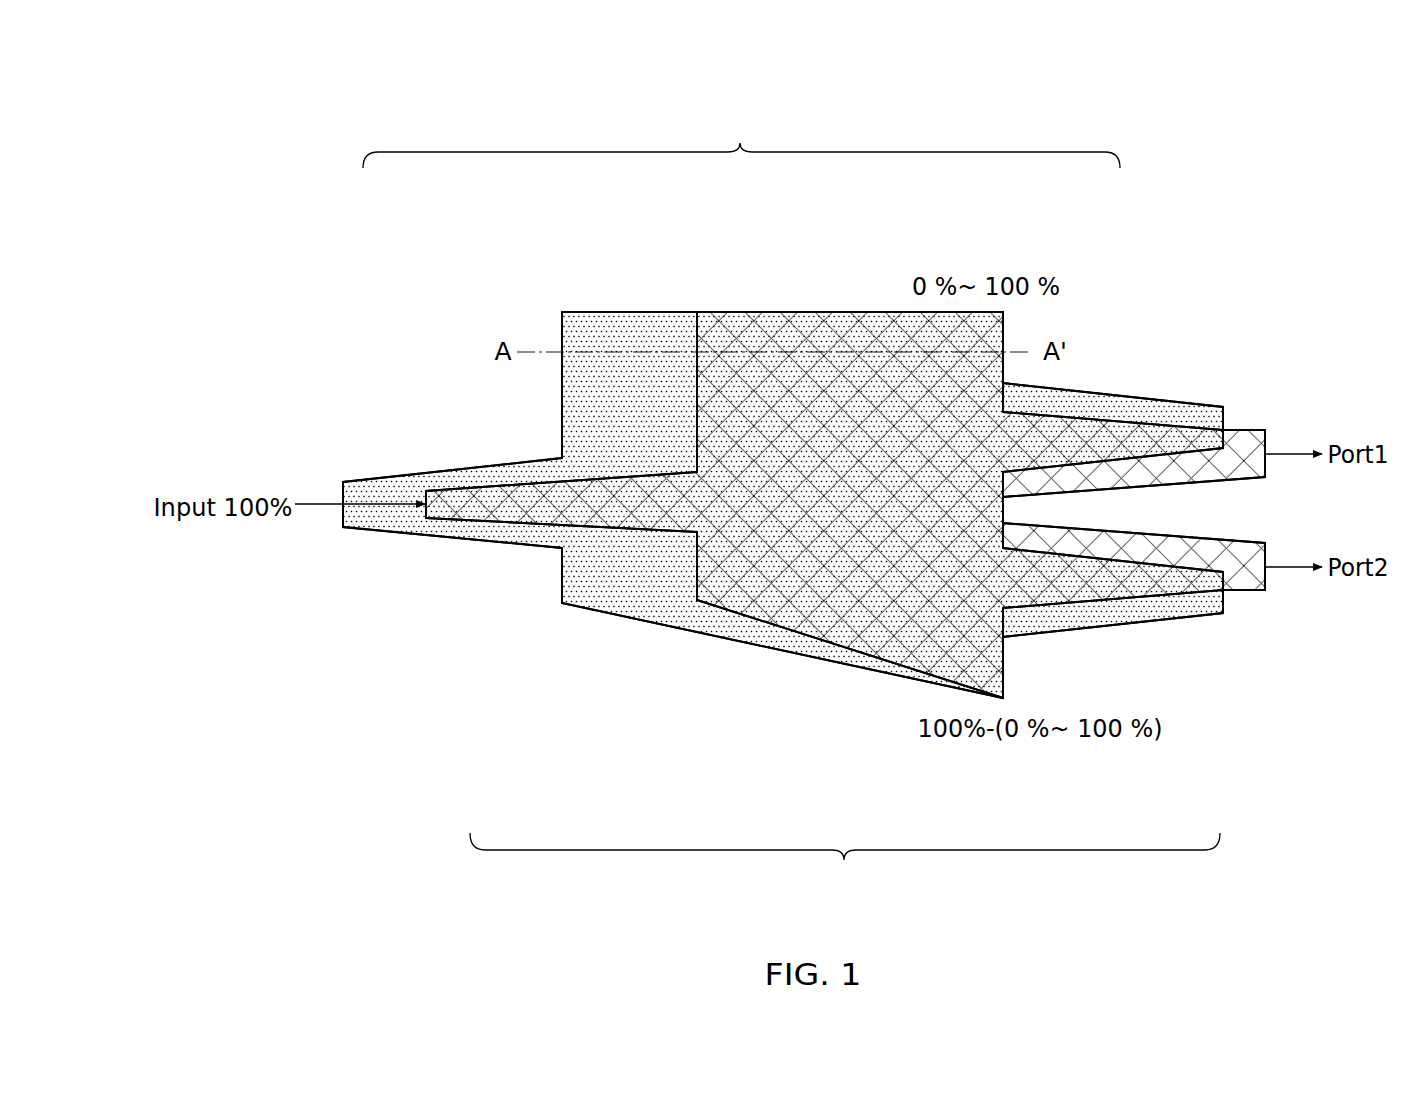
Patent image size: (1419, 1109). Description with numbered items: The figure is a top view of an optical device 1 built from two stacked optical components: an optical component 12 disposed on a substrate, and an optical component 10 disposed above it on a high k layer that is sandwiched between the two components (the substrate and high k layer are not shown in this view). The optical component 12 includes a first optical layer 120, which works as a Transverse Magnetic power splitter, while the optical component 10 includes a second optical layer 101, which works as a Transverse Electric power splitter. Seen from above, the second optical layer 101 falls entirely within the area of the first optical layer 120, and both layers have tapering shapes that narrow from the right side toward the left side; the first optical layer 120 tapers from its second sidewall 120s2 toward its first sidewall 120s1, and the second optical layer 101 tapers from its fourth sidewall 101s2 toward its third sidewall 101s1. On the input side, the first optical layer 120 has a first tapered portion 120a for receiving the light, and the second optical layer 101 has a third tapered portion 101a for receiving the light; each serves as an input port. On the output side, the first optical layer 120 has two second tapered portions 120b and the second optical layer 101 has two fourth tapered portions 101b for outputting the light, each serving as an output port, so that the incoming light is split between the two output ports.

The optical device 1 is at (176, 121).
The optical component 10 is at (845, 864).
The optical component 12 is at (741, 140).
The second optical layer 101 is at (853, 605).
The third tapered portion 101a is at (505, 508).
The fourth tapered portions 101b is at (1242, 568).
The third sidewall 101s1 is at (696, 392).
The fourth sidewall 101s2 is at (1005, 653).
The first optical layer 120 is at (676, 335).
The first tapered portion 120a is at (385, 487).
The second tapered portions 120b is at (1086, 402).
The first sidewall 120s1 is at (561, 427).
The second sidewall 120s2 is at (1005, 685).